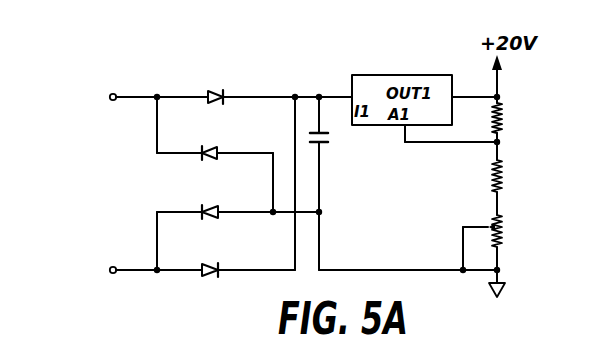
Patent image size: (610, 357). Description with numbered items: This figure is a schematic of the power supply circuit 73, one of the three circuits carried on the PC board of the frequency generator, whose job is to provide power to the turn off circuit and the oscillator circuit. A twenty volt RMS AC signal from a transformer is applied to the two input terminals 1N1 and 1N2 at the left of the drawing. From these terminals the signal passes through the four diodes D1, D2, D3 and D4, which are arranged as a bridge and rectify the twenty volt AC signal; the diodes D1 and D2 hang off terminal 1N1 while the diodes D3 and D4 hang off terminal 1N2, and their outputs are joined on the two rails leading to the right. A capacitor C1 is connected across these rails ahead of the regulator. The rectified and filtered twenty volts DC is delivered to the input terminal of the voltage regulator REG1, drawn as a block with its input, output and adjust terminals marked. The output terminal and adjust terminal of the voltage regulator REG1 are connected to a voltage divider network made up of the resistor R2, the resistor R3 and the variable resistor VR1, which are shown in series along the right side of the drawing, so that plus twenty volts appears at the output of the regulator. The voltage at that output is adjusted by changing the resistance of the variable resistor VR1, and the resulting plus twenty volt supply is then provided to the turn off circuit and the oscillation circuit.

The power supply circuit 73 is at (283, 78).
The terminal 1N1 is at (84, 98).
The terminal 1N2 is at (84, 272).
The diode D1 is at (212, 91).
The diode D2 is at (212, 146).
The diode D3 is at (208, 205).
The diode D4 is at (210, 262).
The capacitor C1 is at (333, 147).
The voltage regulator REG1 is at (436, 74).
The resistor R2 is at (503, 118).
The resistor R3 is at (503, 178).
The variable resistor VR1 is at (510, 230).